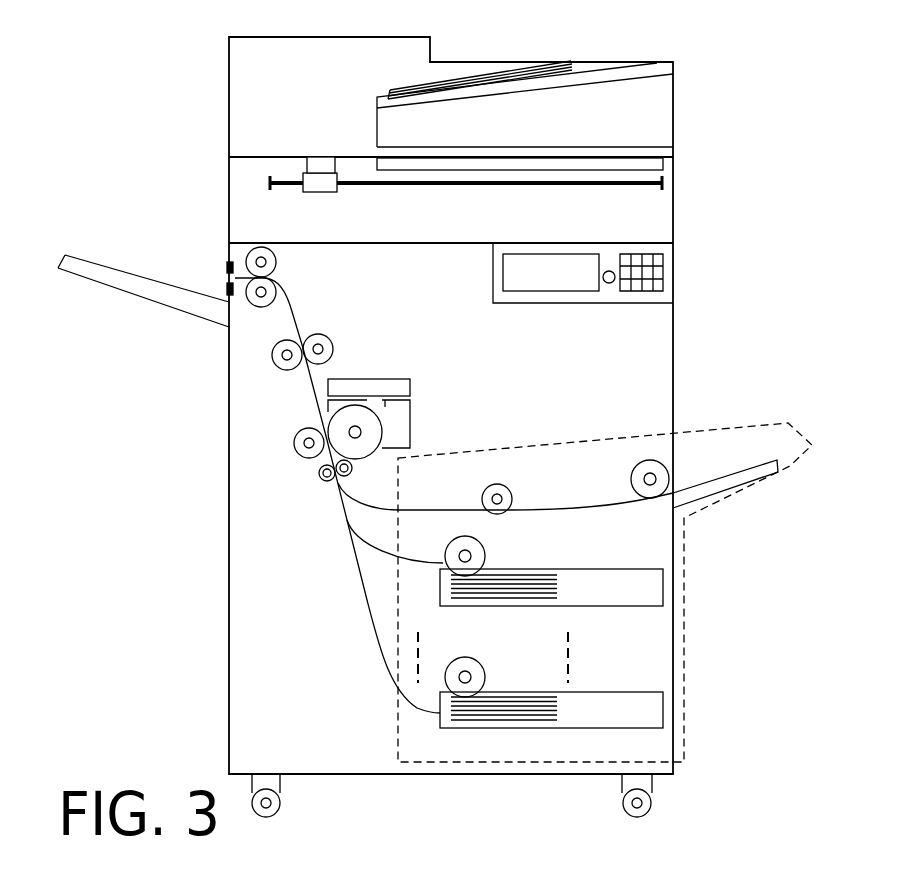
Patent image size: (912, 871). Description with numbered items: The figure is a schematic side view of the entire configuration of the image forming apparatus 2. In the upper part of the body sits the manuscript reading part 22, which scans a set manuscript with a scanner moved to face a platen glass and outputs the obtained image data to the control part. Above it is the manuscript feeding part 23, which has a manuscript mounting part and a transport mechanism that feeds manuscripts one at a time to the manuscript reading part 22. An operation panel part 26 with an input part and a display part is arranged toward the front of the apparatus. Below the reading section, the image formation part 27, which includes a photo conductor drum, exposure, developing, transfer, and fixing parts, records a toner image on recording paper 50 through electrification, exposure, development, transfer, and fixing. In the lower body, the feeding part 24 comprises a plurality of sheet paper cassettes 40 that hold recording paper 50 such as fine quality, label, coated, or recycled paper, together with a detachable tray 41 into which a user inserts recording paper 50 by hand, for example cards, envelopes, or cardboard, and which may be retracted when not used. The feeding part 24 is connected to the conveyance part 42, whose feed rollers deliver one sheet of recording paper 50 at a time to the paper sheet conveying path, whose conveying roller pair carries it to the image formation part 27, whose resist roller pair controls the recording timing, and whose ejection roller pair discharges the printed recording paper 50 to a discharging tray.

The image forming apparatus 2 is at (737, 836).
The manuscript reading part 22 is at (219, 191).
The manuscript feeding part 23 is at (219, 97).
The feeding part 24 is at (684, 568).
The operation panel part 26 is at (673, 288).
The image formation part 27 is at (430, 398).
The sheet paper cassette 40 is at (597, 569).
The detachable tray 41 is at (748, 468).
The conveyance part 42 is at (295, 303).
The recording paper 50 is at (460, 593).